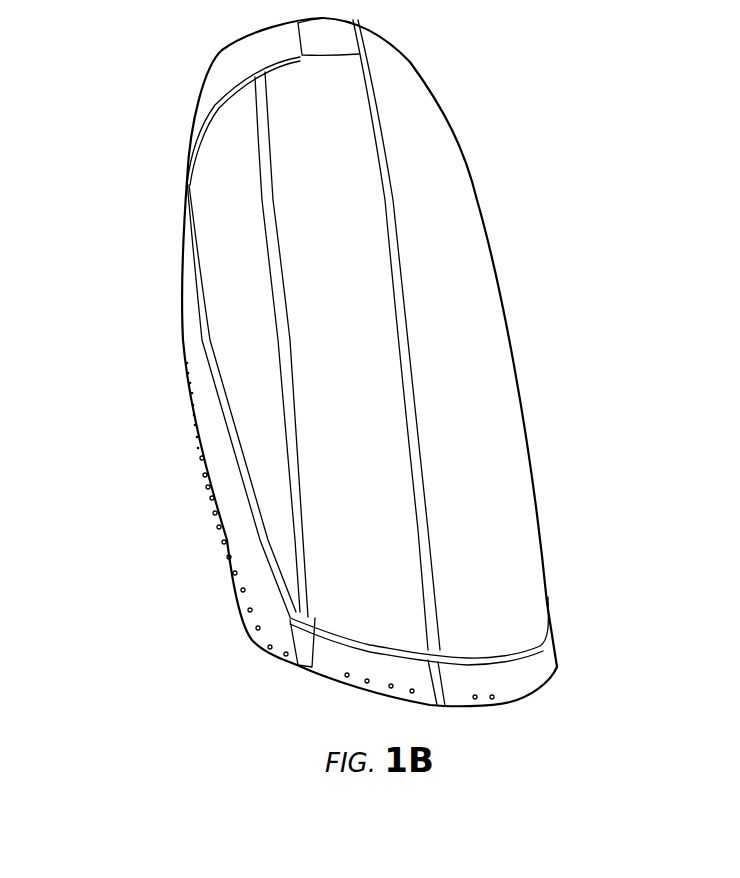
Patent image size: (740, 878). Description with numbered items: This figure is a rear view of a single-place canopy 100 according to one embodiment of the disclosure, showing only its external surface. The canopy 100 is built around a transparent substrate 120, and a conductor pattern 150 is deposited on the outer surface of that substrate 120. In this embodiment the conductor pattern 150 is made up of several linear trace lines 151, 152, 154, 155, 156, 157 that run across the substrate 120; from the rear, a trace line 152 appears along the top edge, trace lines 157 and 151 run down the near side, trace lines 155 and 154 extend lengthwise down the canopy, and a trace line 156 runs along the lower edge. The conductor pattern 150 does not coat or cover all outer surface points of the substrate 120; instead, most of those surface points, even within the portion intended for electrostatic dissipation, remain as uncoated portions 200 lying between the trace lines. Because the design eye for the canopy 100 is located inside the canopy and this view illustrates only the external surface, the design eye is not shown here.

The single-place canopy 100 is at (550, 396).
The transparent substrate 120 is at (438, 160).
The conductor pattern 150 is at (347, 53).
The linear trace line 151 is at (207, 357).
The linear trace line 152 is at (297, 27).
The linear trace line 154 is at (402, 312).
The linear trace line 155 is at (273, 190).
The linear trace line 156 is at (398, 648).
The linear trace line 157 is at (243, 80).
The uncoated portions 200 is at (345, 452).